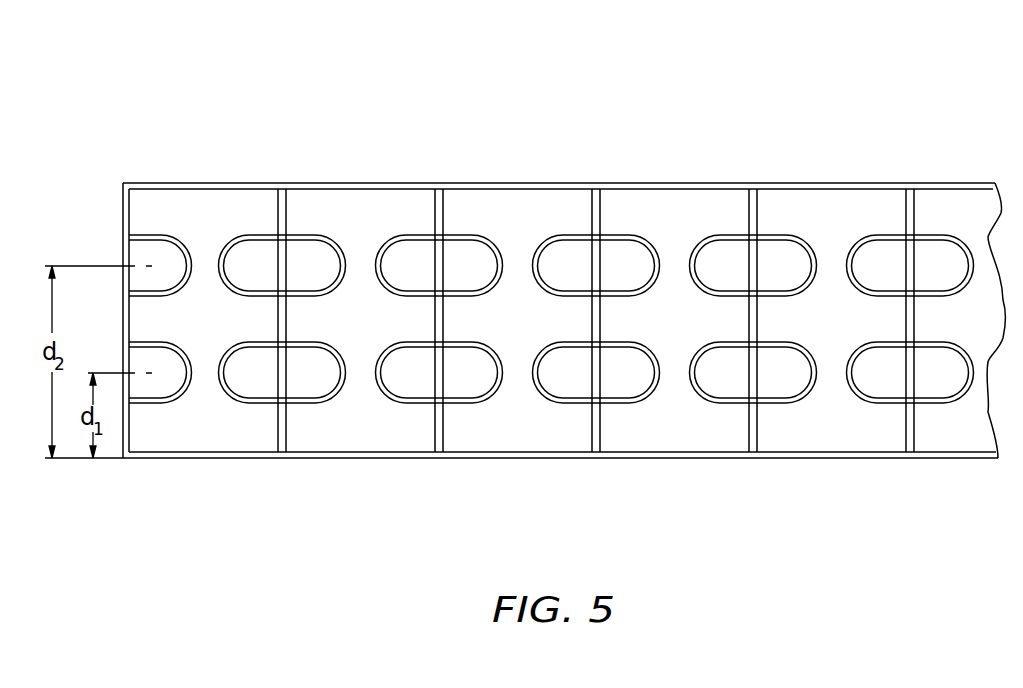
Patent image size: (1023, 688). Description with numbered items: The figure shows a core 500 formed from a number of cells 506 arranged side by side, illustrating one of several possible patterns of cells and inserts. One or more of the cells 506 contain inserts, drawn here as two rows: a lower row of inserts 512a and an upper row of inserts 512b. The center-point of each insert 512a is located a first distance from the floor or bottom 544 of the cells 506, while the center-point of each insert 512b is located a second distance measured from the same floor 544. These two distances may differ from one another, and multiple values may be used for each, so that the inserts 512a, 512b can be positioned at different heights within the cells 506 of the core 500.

The core 500 is at (920, 90).
The cell 506 is at (227, 331).
The insert 512a is at (260, 403).
The insert 512b is at (260, 235).
The floor/bottom 544 is at (680, 457).